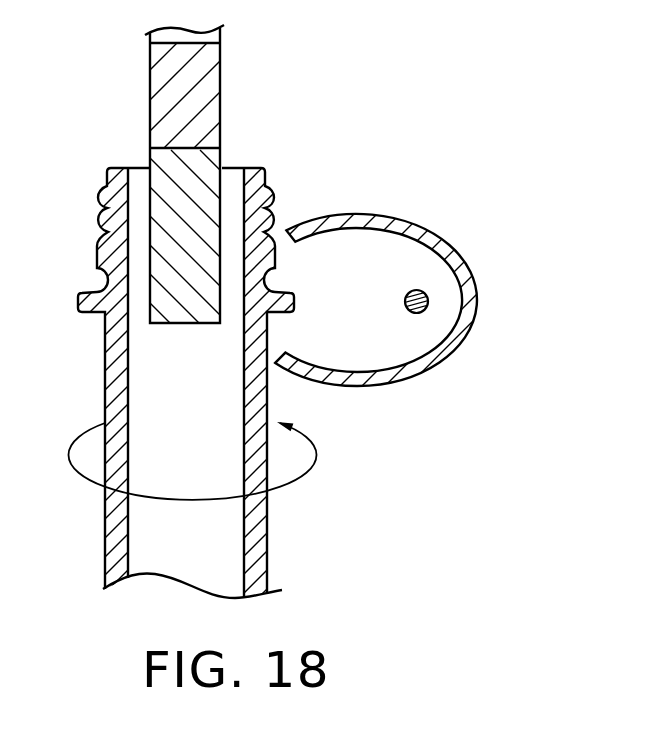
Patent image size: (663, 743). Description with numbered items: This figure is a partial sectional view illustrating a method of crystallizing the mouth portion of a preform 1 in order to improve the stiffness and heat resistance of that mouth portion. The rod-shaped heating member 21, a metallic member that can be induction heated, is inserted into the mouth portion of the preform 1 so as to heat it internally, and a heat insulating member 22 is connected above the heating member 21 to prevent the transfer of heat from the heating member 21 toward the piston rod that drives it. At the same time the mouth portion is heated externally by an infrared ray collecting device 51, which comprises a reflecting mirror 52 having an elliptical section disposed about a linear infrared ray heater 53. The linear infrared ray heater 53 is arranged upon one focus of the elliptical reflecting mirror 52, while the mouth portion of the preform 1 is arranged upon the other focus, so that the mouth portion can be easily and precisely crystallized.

The preform 1 is at (110, 402).
The heating member 21 is at (198, 208).
The heat insulating member 22 is at (203, 88).
The infrared ray collecting device 51 is at (358, 273).
The reflecting mirror 52 is at (393, 220).
The linear infrared ray heater 53 is at (427, 297).